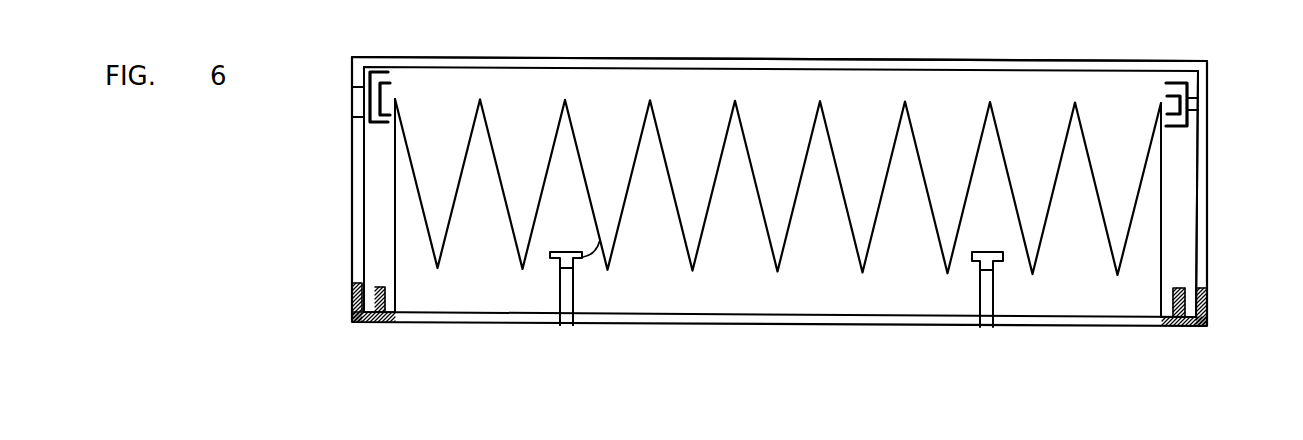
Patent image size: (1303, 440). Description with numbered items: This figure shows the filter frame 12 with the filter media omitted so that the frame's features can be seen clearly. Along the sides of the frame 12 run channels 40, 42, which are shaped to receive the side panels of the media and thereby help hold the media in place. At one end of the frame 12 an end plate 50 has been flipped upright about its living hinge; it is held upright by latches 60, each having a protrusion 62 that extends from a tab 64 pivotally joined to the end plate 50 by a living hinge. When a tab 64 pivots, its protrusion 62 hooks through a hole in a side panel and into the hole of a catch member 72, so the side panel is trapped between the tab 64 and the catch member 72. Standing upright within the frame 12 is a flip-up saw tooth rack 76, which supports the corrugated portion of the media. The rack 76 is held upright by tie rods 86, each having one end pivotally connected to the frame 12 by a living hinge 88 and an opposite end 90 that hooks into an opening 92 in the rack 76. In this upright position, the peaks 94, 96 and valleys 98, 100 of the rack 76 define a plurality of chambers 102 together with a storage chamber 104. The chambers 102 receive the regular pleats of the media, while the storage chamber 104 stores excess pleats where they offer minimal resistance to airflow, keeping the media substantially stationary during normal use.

The frame 12 is at (735, 327).
The channel 40 is at (368, 287).
The channel 42 is at (1190, 287).
The end plate 50 is at (995, 62).
The latch 60 is at (1208, 128).
The protrusion 62 is at (397, 99).
The tab 64 is at (352, 97).
The catch member 72 is at (381, 82).
The saw tooth rack 76 is at (667, 162).
The tie rod 86 is at (575, 297).
The living hinge 88 is at (565, 326).
The opposite end 90 is at (561, 252).
The opening 92 is at (603, 235).
The peak 94 is at (565, 99).
The peak 96 is at (397, 100).
The valley 98 is at (523, 240).
The valley 100 is at (385, 280).
The chamber 102 is at (950, 125).
The storage chamber 104 is at (383, 230).